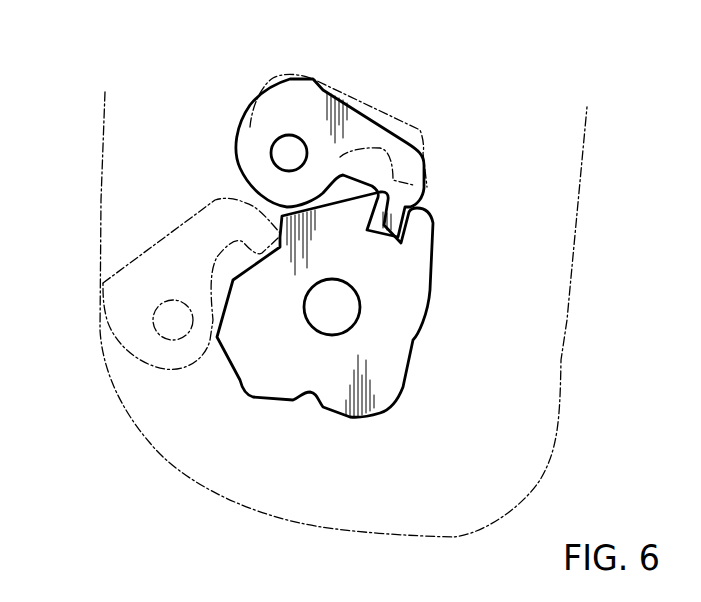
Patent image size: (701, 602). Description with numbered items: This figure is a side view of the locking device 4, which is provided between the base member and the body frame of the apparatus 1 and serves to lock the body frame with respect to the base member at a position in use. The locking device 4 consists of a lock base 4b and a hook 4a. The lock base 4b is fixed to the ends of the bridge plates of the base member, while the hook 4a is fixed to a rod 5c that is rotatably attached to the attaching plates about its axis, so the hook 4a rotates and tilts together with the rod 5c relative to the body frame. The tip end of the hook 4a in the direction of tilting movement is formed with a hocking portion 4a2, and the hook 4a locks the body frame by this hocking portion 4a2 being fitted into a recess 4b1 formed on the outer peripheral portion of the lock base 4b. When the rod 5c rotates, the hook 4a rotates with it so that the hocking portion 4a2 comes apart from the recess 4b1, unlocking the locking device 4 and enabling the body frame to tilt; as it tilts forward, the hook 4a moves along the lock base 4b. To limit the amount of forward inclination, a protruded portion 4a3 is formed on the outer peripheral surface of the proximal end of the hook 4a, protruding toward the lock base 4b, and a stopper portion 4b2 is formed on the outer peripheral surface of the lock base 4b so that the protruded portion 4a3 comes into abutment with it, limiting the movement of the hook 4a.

The housing 1 is at (91, 72).
The locking device 4 is at (158, 216).
The hook 4a is at (317, 83).
The hocking portion 4a2 is at (398, 222).
The protruded portion 4a3 is at (152, 420).
The lock base 4b is at (413, 355).
The recess 4b1 is at (375, 248).
The stopper portion 4b2 is at (177, 353).
The rod 5c is at (287, 148).